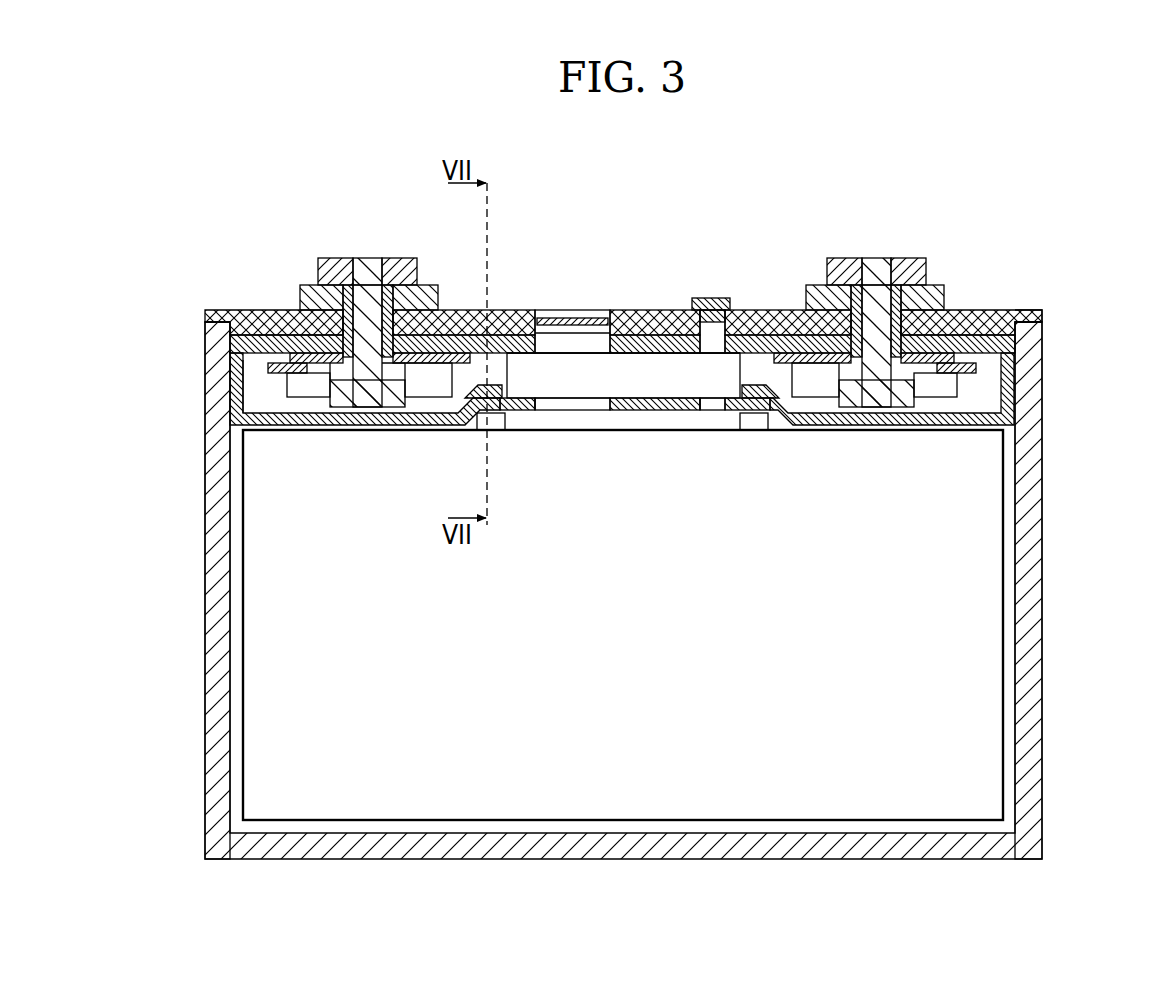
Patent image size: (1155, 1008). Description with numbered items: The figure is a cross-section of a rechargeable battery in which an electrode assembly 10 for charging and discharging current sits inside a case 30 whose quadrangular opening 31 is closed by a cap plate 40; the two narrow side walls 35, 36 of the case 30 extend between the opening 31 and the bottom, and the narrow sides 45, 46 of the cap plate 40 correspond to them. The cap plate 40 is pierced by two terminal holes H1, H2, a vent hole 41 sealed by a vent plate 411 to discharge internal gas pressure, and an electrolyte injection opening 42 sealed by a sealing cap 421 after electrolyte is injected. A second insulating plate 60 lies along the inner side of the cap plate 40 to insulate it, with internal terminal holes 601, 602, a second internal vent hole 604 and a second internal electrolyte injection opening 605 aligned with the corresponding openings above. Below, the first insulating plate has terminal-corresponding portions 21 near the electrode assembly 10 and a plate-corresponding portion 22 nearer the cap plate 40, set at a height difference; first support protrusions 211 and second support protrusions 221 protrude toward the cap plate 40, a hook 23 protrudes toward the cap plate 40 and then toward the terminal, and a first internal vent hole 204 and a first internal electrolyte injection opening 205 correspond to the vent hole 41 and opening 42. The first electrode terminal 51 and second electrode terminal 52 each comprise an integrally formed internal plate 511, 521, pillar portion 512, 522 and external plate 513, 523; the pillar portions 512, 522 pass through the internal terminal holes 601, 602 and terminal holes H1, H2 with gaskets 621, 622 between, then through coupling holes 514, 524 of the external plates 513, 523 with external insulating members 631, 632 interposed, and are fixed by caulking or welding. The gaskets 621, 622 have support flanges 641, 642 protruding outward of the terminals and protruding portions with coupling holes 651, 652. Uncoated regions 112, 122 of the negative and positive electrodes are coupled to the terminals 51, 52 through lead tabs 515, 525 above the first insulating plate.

The electrode assembly 10 is at (1010, 518).
The terminal-corresponding portion 21 is at (567, 433).
The first support protrusion 211 is at (240, 392).
The plate-corresponding portion 22 is at (635, 364).
The second support protrusion 221 is at (660, 375).
The hook 23 is at (393, 367).
The case 30 is at (631, 553).
The opening 31 is at (1016, 318).
The narrow side wall 35 is at (1043, 700).
The narrow side wall 36 is at (205, 640).
The cap plate 40 is at (268, 322).
The vent hole 41 is at (572, 302).
The vent plate 411 is at (590, 320).
The electrolyte injection opening 42 is at (718, 281).
The sealing cap 421 is at (712, 300).
The narrow side 45 is at (1042, 315).
The narrow side 46 is at (212, 322).
The first electrode terminal 51 is at (347, 336).
The internal plate 511 is at (322, 270).
The pillar portion 512 is at (385, 270).
The external plate 513 is at (345, 275).
The coupling hole 514 is at (372, 300).
The lead tab 515 is at (345, 407).
The second electrode terminal 52 is at (891, 336).
The internal plate 521 is at (948, 265).
The pillar portion 522 is at (876, 262).
The external plate 523 is at (906, 262).
The coupling hole 524 is at (870, 262).
The lead tab 525 is at (872, 410).
The second insulating plate 60 is at (237, 345).
The internal terminal hole 601 is at (350, 400).
The internal terminal hole 602 is at (880, 400).
The second internal vent hole 604 is at (570, 410).
The second internal electrolyte injection opening 605 is at (682, 410).
The gasket 621 is at (395, 298).
The gasket 622 is at (852, 298).
The external insulating member 631 is at (432, 302).
The external insulating member 632 is at (818, 300).
The support flange 641 is at (457, 352).
The support flange 642 is at (940, 345).
The coupling hole 651 is at (425, 390).
The coupling hole 652 is at (822, 390).
The uncoated region 112 is at (488, 396).
The uncoated region 122 is at (755, 396).
The first internal vent hole 204 is at (590, 411).
The first internal electrolyte injection opening 205 is at (712, 411).
The terminal hole H1 is at (390, 320).
The terminal hole H2 is at (858, 320).